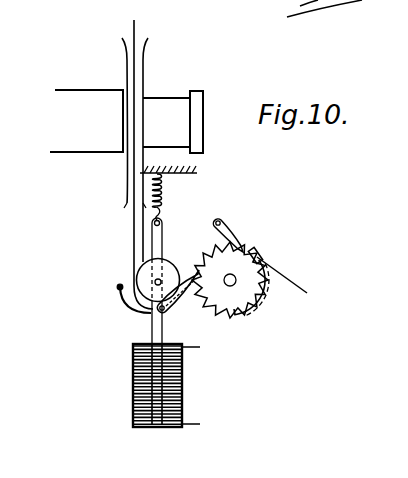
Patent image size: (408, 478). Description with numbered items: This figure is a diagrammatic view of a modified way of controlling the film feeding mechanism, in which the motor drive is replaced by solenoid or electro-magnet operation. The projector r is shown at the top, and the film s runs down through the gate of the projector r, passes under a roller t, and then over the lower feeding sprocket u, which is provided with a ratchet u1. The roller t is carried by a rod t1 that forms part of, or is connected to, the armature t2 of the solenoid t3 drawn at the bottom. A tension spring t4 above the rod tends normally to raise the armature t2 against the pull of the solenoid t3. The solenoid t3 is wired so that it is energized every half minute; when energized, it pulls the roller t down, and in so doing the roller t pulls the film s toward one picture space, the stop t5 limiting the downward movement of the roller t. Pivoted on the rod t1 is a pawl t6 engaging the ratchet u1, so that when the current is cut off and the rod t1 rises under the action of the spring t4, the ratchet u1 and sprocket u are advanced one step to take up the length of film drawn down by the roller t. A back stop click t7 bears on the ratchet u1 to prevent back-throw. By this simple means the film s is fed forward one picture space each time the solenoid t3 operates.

The projector r is at (197, 117).
The film s is at (133, 236).
The roller t is at (167, 272).
The rod t1 is at (162, 225).
The armature t2 is at (152, 332).
The solenoid t3 is at (133, 380).
The tension spring t4 is at (165, 190).
The stop t5 is at (130, 302).
The pawl t6 is at (180, 301).
The back stop click t7 is at (232, 242).
The lower feeding sprocket u is at (243, 271).
The ratchet u1 is at (247, 251).